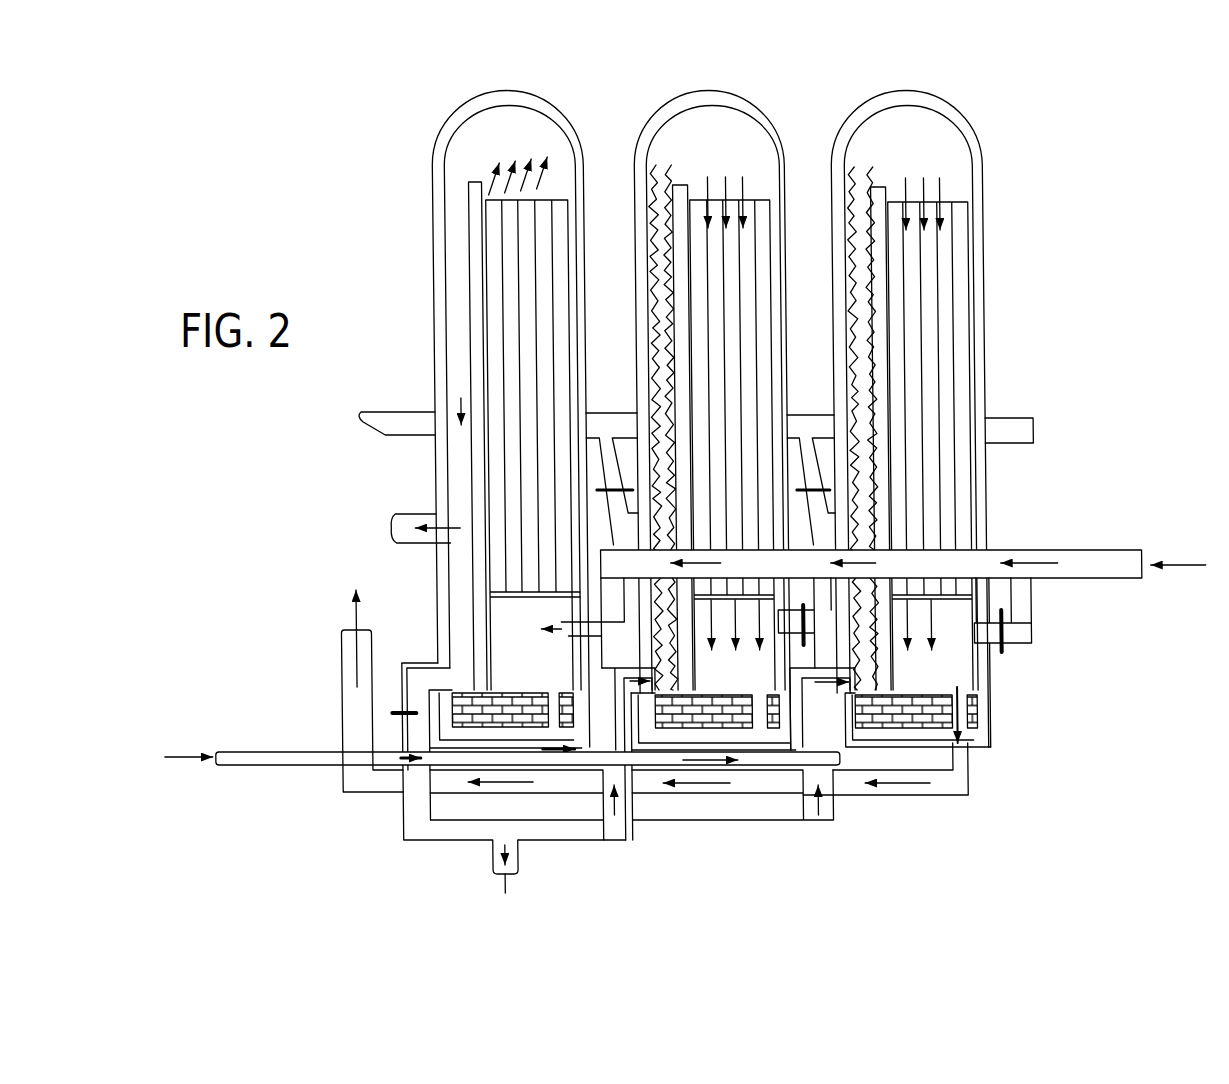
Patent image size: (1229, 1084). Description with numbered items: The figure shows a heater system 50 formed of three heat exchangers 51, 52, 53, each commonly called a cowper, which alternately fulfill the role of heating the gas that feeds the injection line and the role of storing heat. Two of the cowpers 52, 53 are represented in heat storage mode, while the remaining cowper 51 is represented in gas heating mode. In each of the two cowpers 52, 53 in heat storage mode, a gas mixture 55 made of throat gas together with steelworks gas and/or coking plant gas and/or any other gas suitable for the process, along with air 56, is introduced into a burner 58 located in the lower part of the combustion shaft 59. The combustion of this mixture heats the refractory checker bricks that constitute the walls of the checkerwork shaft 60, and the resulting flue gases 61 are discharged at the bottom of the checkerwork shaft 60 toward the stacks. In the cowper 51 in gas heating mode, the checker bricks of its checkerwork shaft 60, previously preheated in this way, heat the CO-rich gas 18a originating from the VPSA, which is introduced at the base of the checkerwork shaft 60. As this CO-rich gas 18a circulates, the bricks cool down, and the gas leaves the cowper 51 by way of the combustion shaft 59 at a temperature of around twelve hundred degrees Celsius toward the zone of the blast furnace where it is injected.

The heater system 50 is at (376, 176).
The heat exchanger (cowper) in gas heating mode 51 is at (532, 96).
The heat exchanger (cowper) in heat storage mode 52 is at (735, 96).
The heat exchanger (cowper) in heat storage mode 53 is at (955, 104).
The CO-rich gas 18a is at (1178, 565).
The gas mixture for heating 55 is at (612, 818).
The air 56 is at (182, 757).
The burner 58 is at (640, 668).
The combustion shaft 59 is at (657, 341).
The checkerwork shaft 60 is at (540, 263).
The flue gases 61 is at (353, 613).